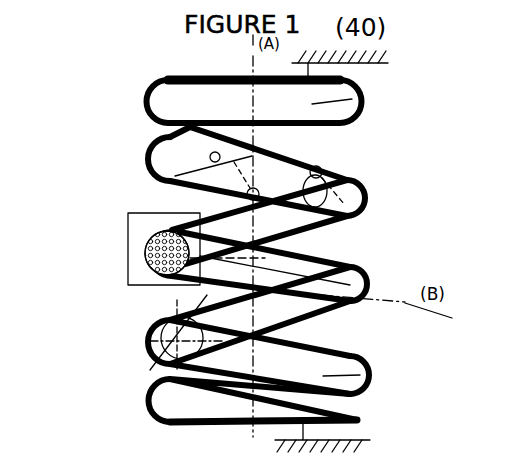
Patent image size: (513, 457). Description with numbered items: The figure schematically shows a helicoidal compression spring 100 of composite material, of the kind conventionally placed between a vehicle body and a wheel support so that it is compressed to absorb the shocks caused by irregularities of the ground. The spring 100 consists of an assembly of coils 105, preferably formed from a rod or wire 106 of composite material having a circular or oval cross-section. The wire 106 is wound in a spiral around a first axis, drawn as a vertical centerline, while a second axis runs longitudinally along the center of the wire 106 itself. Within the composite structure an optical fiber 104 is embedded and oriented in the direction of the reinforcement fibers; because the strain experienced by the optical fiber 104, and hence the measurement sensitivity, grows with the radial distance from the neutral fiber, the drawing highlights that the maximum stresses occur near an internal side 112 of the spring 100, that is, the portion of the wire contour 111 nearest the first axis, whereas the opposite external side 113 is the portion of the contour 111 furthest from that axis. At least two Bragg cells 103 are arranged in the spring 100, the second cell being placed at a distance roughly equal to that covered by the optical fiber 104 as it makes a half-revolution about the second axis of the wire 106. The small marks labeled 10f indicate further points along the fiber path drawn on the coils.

The helicoidal compression spring 100 is at (85, 107).
The Bragg cell 103 is at (232, 158).
The optical fiber 104 is at (160, 172).
The assembly of coils 105 is at (330, 165).
The wire 106 is at (170, 405).
The wire surface 10f is at (128, 246).
The contour 111 is at (333, 264).
The internal side 112 is at (165, 284).
The external side 113 is at (138, 153).